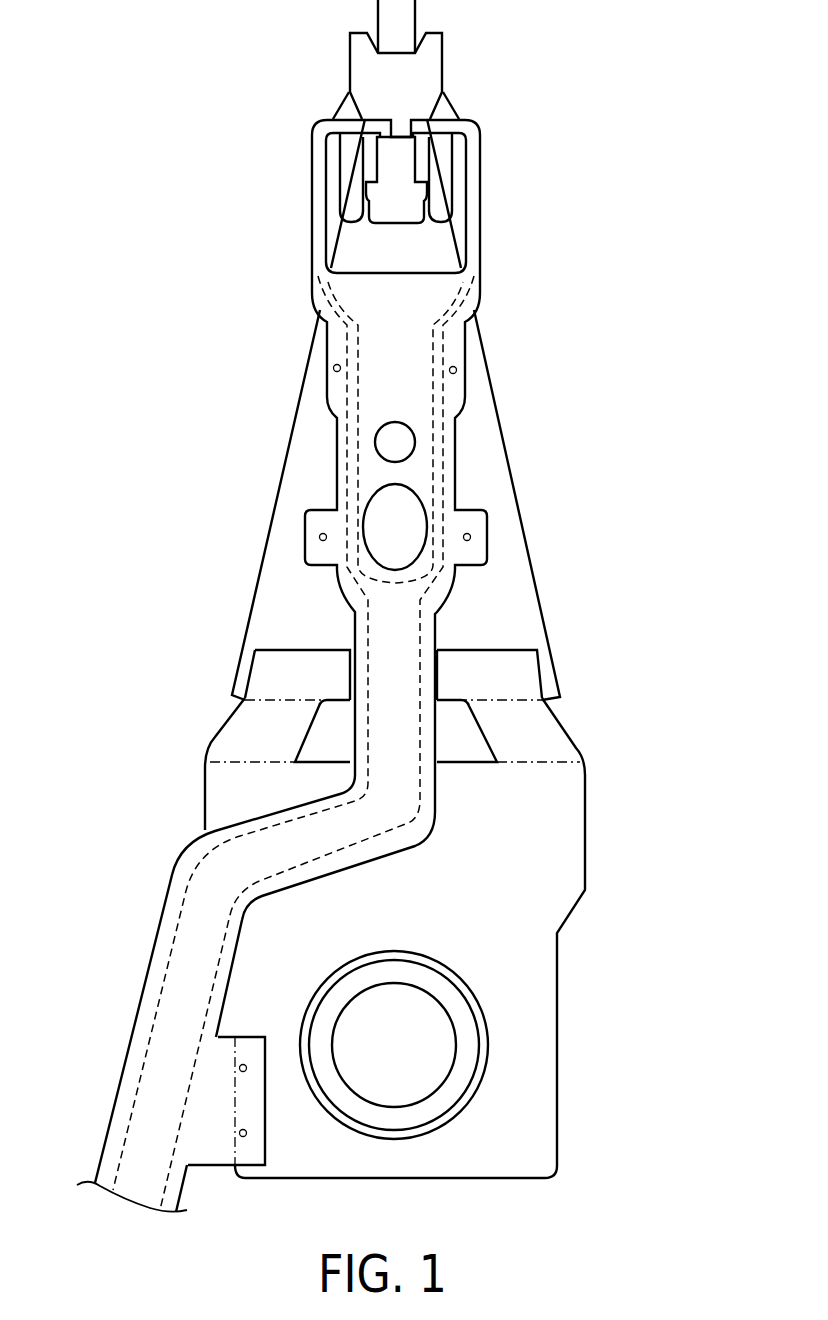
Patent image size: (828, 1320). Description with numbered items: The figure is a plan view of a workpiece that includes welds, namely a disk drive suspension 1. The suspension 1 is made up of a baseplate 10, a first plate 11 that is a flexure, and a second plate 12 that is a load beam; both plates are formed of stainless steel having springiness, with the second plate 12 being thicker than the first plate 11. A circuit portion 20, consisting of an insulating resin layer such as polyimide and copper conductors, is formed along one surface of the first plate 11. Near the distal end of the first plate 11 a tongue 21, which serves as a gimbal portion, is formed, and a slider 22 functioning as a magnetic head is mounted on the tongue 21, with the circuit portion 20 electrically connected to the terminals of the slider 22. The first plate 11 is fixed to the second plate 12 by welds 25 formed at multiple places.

The disk drive suspension 1 is at (596, 288).
The baseplate 10 is at (555, 860).
The first plate 11 is at (407, 473).
The second plate 12 is at (517, 588).
The circuit portion 20 is at (387, 585).
The tongue 21 is at (368, 153).
The slider 22 is at (395, 167).
The welds 25 is at (333, 368).